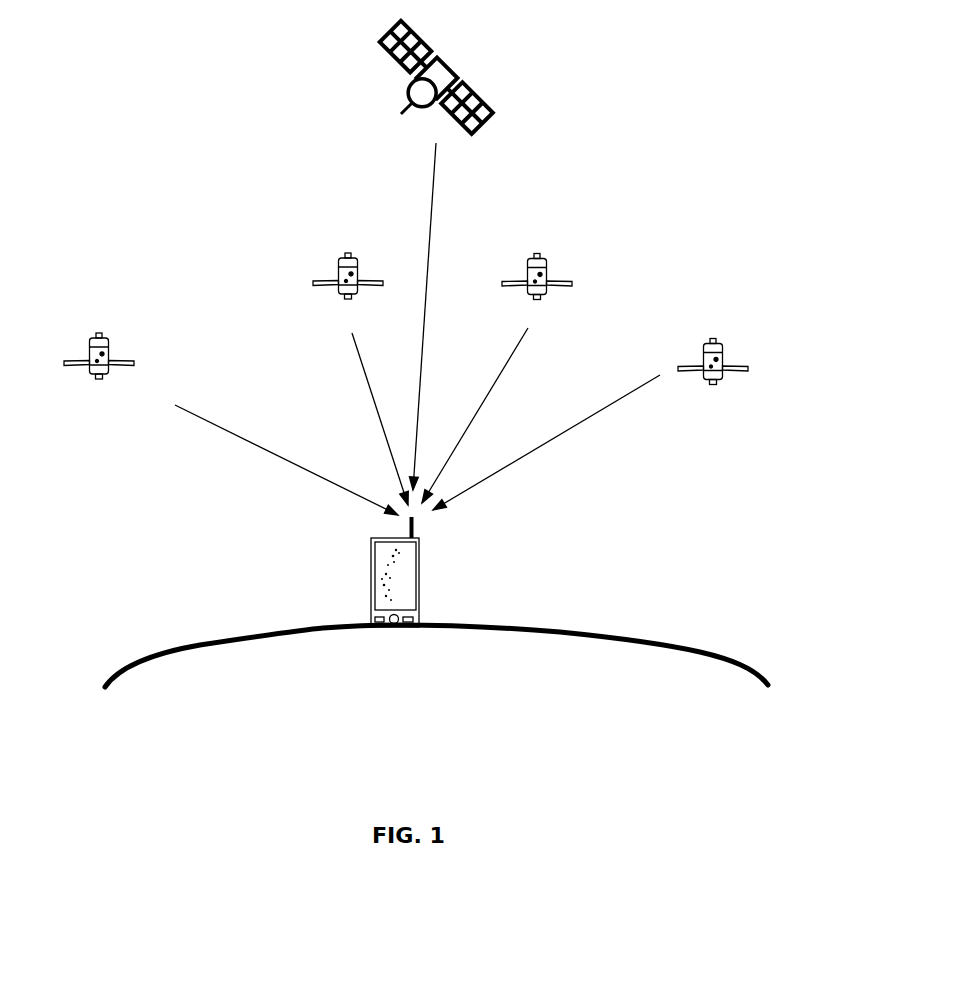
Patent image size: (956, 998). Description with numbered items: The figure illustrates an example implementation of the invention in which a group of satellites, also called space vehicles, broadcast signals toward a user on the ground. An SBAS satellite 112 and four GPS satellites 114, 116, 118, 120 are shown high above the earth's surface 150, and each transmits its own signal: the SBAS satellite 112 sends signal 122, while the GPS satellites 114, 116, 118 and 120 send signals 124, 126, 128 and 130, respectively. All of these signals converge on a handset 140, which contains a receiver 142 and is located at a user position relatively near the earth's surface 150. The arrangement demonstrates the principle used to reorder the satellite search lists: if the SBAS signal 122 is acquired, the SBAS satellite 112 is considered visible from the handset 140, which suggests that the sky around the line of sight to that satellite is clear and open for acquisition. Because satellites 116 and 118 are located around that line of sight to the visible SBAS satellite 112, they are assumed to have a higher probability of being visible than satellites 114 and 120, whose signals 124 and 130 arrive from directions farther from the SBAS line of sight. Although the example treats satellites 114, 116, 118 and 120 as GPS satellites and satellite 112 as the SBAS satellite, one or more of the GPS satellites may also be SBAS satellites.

The SBAS satellite 112 is at (500, 90).
The GPS satellite 114 is at (101, 369).
The GPS satellite 116 is at (348, 289).
The GPS satellite 118 is at (536, 290).
The GPS satellite 120 is at (713, 376).
The signal 122 is at (432, 225).
The signal 124 is at (270, 453).
The signal 126 is at (375, 398).
The signal 128 is at (487, 397).
The signal 130 is at (522, 456).
The handset 140 is at (419, 588).
The receiver 142 is at (393, 570).
The earth's surface 150 is at (325, 635).